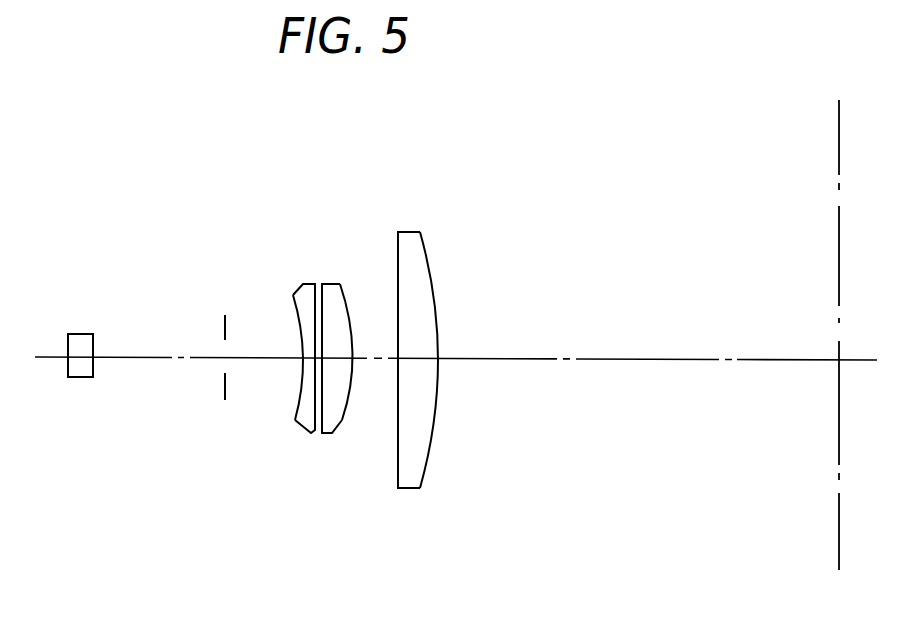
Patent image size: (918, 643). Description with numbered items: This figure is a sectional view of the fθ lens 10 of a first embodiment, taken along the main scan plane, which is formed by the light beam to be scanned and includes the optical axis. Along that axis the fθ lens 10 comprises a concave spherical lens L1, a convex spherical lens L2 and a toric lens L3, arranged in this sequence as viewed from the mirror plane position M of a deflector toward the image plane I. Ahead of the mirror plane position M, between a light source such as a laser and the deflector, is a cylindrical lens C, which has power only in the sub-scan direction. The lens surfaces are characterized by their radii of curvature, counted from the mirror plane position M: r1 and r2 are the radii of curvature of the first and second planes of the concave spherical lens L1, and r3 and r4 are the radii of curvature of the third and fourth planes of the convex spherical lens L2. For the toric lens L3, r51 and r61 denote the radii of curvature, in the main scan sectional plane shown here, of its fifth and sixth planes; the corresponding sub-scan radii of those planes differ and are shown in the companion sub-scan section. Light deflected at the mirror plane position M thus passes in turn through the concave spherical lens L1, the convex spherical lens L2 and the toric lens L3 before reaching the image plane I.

The cylindrical lens C is at (80, 337).
The mirror plane position M is at (227, 339).
The fθ lens 10 is at (355, 240).
The concave spherical lens L1 is at (295, 367).
The convex spherical lens L2 is at (354, 367).
The toric lens L3 is at (430, 359).
The radius of curvature of first plane r1 is at (295, 421).
The radius of curvature of second plane r2 is at (314, 430).
The radius of curvature of third plane r3 is at (324, 435).
The radius of curvature of fourth plane r4 is at (342, 422).
The radius of curvature of fifth plane in main scan sectional plane r51 is at (398, 458).
The radius of curvature of sixth plane in main scan sectional plane r61 is at (426, 466).
The image plane I is at (838, 319).